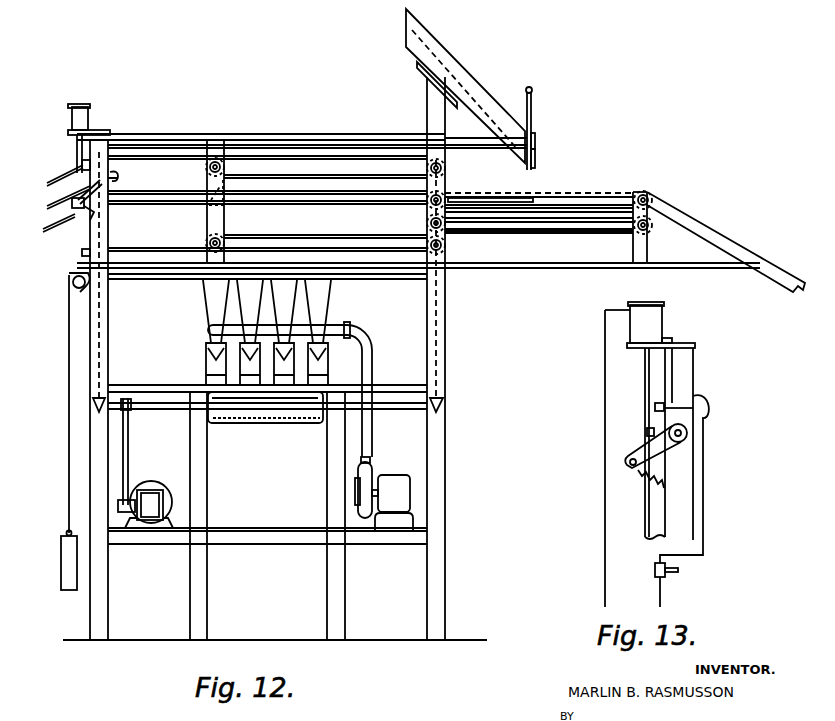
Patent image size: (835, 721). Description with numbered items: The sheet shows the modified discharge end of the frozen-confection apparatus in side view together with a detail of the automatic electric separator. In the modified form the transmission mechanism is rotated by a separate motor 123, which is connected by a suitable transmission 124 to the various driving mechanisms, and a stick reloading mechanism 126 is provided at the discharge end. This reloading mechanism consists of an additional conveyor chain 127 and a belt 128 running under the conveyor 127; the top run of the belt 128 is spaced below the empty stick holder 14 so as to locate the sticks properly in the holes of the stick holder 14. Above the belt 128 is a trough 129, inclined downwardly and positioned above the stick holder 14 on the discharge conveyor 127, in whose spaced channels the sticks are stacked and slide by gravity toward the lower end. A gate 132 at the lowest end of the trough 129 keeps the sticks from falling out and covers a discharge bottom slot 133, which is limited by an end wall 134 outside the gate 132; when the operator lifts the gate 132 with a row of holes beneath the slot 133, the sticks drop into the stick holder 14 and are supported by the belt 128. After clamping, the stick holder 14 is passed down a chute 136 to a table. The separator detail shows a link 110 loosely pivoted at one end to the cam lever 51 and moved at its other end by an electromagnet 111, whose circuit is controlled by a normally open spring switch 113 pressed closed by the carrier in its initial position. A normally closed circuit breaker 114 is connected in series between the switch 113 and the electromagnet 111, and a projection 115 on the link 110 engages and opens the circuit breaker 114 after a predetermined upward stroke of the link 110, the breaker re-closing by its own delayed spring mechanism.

In FIG. 12, the stick holder 14 is at (560, 184).
In FIG. 12, the cam lever 51 is at (78, 206).
In FIG. 13, the cam lever 51 is at (670, 445).
In FIG. 12, the link 110 is at (82, 147).
In FIG. 13, the link 110 is at (645, 375).
In FIG. 12, the electromagnet 111 is at (88, 118).
In FIG. 13, the electromagnet 111 is at (655, 321).
In FIG. 12, the spring switch 113 is at (82, 252).
In FIG. 13, the spring switch 113 is at (664, 579).
In FIG. 12, the circuit breaker 114 is at (78, 176).
In FIG. 13, the circuit breaker 114 is at (655, 408).
In FIG. 13, the projection 115 is at (647, 432).
In FIG. 12, the motor 123 is at (153, 482).
In FIG. 12, the transmission 124 is at (152, 515).
In FIG. 12, the stick reloading mechanism 126 is at (565, 122).
In FIG. 12, the conveyor chain 127 is at (613, 211).
In FIG. 12, the belt 128 is at (590, 230).
In FIG. 12, the trough 129 is at (478, 90).
In FIG. 12, the gate 132 is at (531, 110).
In FIG. 12, the discharge bottom slot 133 is at (535, 146).
In FIG. 12, the end wall 134 is at (535, 162).
In FIG. 12, the chute 136 is at (745, 246).